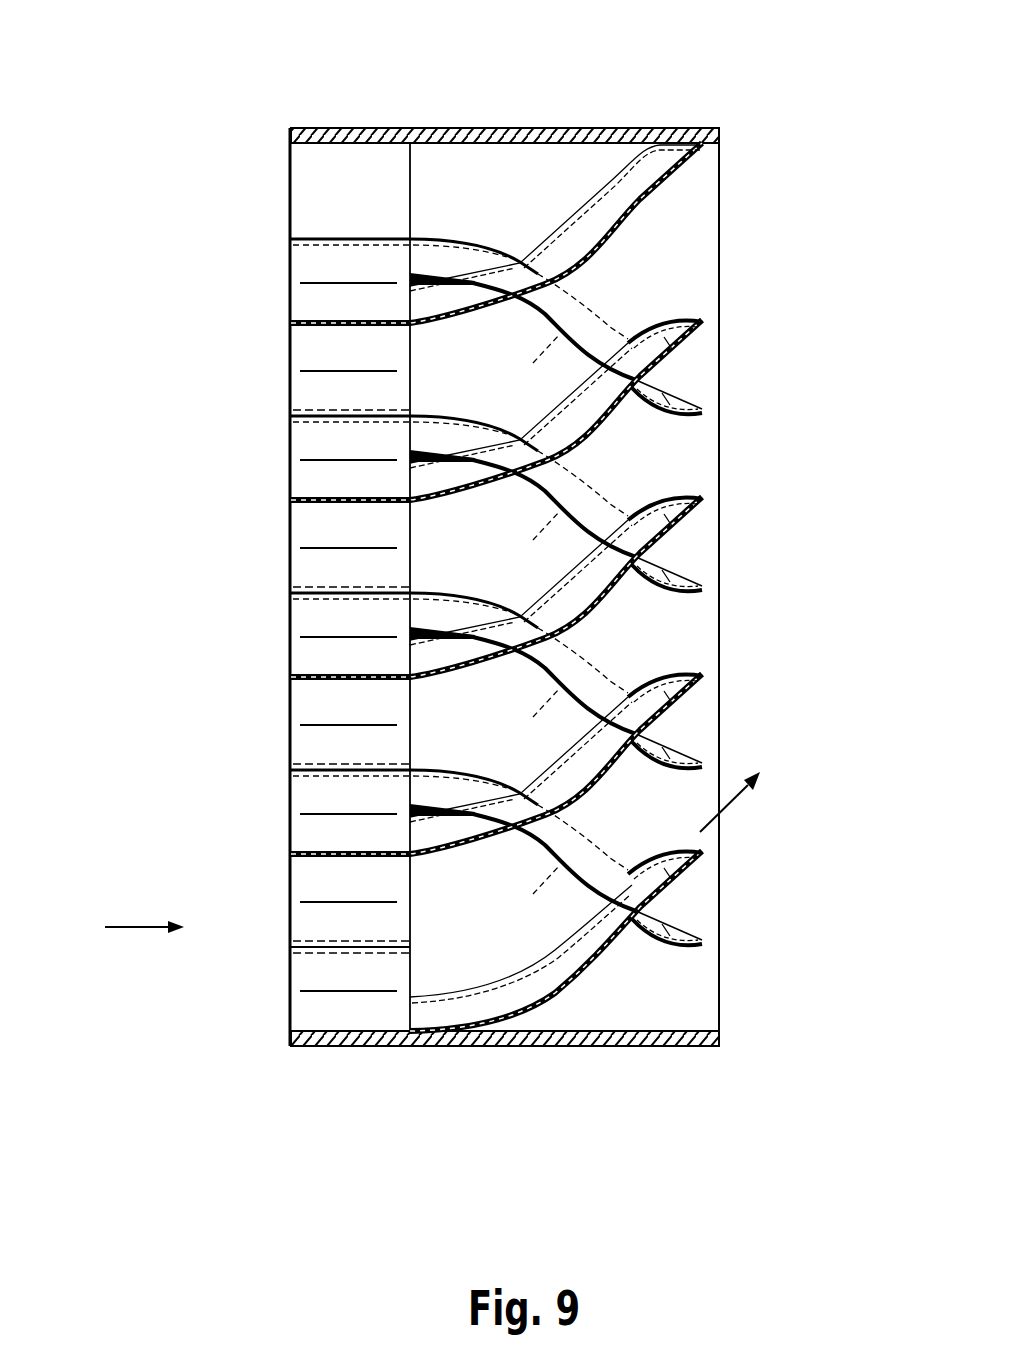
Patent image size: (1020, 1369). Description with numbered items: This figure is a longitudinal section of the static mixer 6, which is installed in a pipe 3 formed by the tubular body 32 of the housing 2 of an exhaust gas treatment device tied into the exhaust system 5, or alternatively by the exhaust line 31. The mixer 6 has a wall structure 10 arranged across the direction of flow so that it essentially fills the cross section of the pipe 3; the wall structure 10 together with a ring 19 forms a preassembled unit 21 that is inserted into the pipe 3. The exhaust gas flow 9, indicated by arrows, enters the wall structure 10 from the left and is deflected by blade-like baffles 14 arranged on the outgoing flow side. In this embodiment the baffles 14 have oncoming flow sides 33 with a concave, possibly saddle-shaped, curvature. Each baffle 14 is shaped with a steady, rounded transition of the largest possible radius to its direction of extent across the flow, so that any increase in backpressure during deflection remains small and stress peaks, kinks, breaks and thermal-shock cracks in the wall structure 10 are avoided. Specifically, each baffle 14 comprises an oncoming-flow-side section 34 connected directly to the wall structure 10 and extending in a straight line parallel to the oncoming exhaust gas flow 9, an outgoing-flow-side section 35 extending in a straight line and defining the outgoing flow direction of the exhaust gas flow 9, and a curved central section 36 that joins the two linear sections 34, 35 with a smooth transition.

The static mixer 6 is at (212, 487).
The exhaust gas flow 9 is at (128, 930).
The wall structure 10 is at (330, 228).
The baffle 14 is at (665, 162).
The unit 21 is at (505, 71).
The housing 2 is at (505, 71).
The exhaust system 5 is at (505, 118).
The ring 19 is at (505, 1108).
The pipe 3 is at (505, 1108).
The exhaust line 31 is at (505, 1108).
The tubular body 32 is at (622, 1047).
The oncoming flow side 33 is at (496, 549).
The oncoming-flow-side section 34 is at (418, 1047).
The outgoing-flow-side section 35 is at (703, 868).
The curved central section 36 is at (527, 1012).